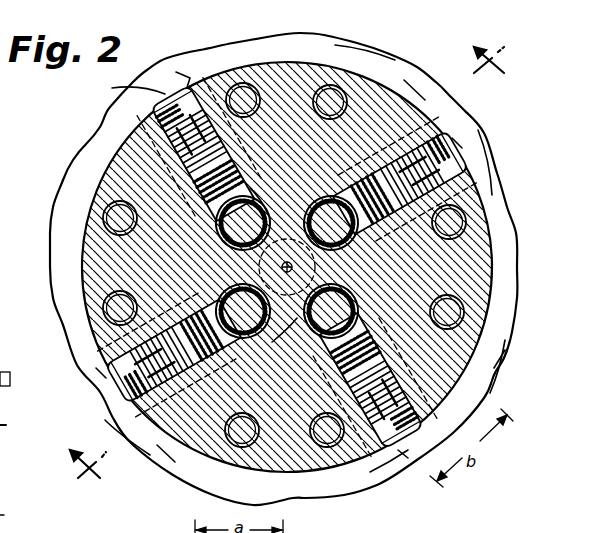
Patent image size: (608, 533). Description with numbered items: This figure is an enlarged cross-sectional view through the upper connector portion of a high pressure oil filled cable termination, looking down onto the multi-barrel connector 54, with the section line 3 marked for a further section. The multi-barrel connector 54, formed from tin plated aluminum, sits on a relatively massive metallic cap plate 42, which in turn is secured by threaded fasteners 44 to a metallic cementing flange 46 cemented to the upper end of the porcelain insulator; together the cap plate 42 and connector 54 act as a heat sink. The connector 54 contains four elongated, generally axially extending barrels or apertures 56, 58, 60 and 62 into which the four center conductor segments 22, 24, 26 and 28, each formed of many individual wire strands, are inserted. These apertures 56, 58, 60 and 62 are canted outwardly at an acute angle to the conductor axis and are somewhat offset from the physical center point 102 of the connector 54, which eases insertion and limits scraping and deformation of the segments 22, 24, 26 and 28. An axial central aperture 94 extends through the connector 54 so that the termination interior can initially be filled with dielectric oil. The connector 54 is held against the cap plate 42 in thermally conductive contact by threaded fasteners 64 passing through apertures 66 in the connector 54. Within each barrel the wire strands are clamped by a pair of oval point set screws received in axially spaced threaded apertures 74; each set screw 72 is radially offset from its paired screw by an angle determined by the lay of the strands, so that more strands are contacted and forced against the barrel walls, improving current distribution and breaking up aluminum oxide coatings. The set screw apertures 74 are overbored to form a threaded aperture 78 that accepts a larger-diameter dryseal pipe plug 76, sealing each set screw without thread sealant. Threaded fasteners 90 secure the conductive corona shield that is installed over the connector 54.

The center conductor segment 22 is at (217, 288).
The center conductor segment 24 is at (361, 288).
The center conductor segment 26 is at (217, 232).
The center conductor segment 28 is at (354, 235).
The cap plate 42 is at (437, 97).
The threaded fasteners 44 is at (0, 432).
The cementing flange 46 is at (9, 523).
The multi-barrel connector 54 is at (90, 187).
The barrel or aperture 56 is at (231, 362).
The barrel or aperture 58 is at (325, 362).
The barrel or aperture 60 is at (249, 186).
The barrel or aperture 62 is at (305, 188).
The threaded fasteners 64 is at (238, 88).
The apertures 66 is at (249, 92).
The set screw 72 is at (197, 182).
The threaded apertures 74 is at (163, 236).
The pipe plugs 76 is at (160, 93).
The threaded aperture 78 is at (183, 75).
The threaded fasteners 90 is at (10, 379).
The axial central aperture 94 is at (285, 324).
The physical center point 102 is at (259, 194).
The section line 3- 3 is at (274, 250).